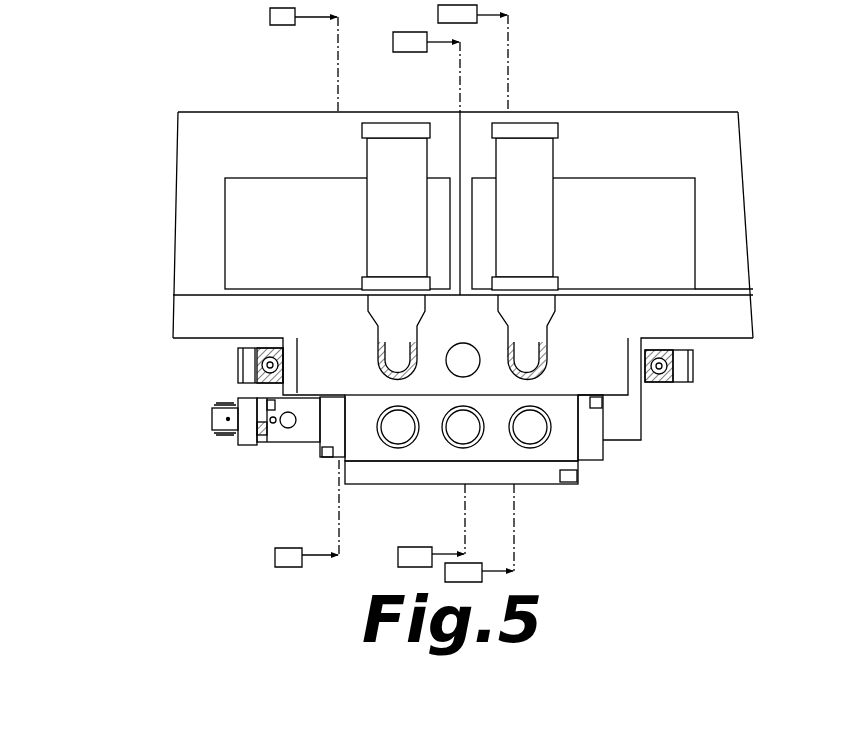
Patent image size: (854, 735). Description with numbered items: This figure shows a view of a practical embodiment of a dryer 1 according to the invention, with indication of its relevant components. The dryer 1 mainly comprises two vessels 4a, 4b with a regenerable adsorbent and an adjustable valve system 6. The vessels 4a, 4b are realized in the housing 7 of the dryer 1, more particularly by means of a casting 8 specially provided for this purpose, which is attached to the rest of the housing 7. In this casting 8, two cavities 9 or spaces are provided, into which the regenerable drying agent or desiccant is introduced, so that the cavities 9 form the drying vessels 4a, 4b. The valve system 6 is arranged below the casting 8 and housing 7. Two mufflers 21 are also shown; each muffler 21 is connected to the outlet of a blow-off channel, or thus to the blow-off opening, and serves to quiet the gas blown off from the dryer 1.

The dryer 1 is at (98, 84).
The vessel 4a is at (248, 188).
The vessel 4b is at (665, 138).
The adjustable valve system 6 is at (669, 465).
The housing 7 is at (173, 313).
The casting 8 is at (177, 188).
The cavity 9 is at (265, 133).
The muffler 21 is at (393, 160).